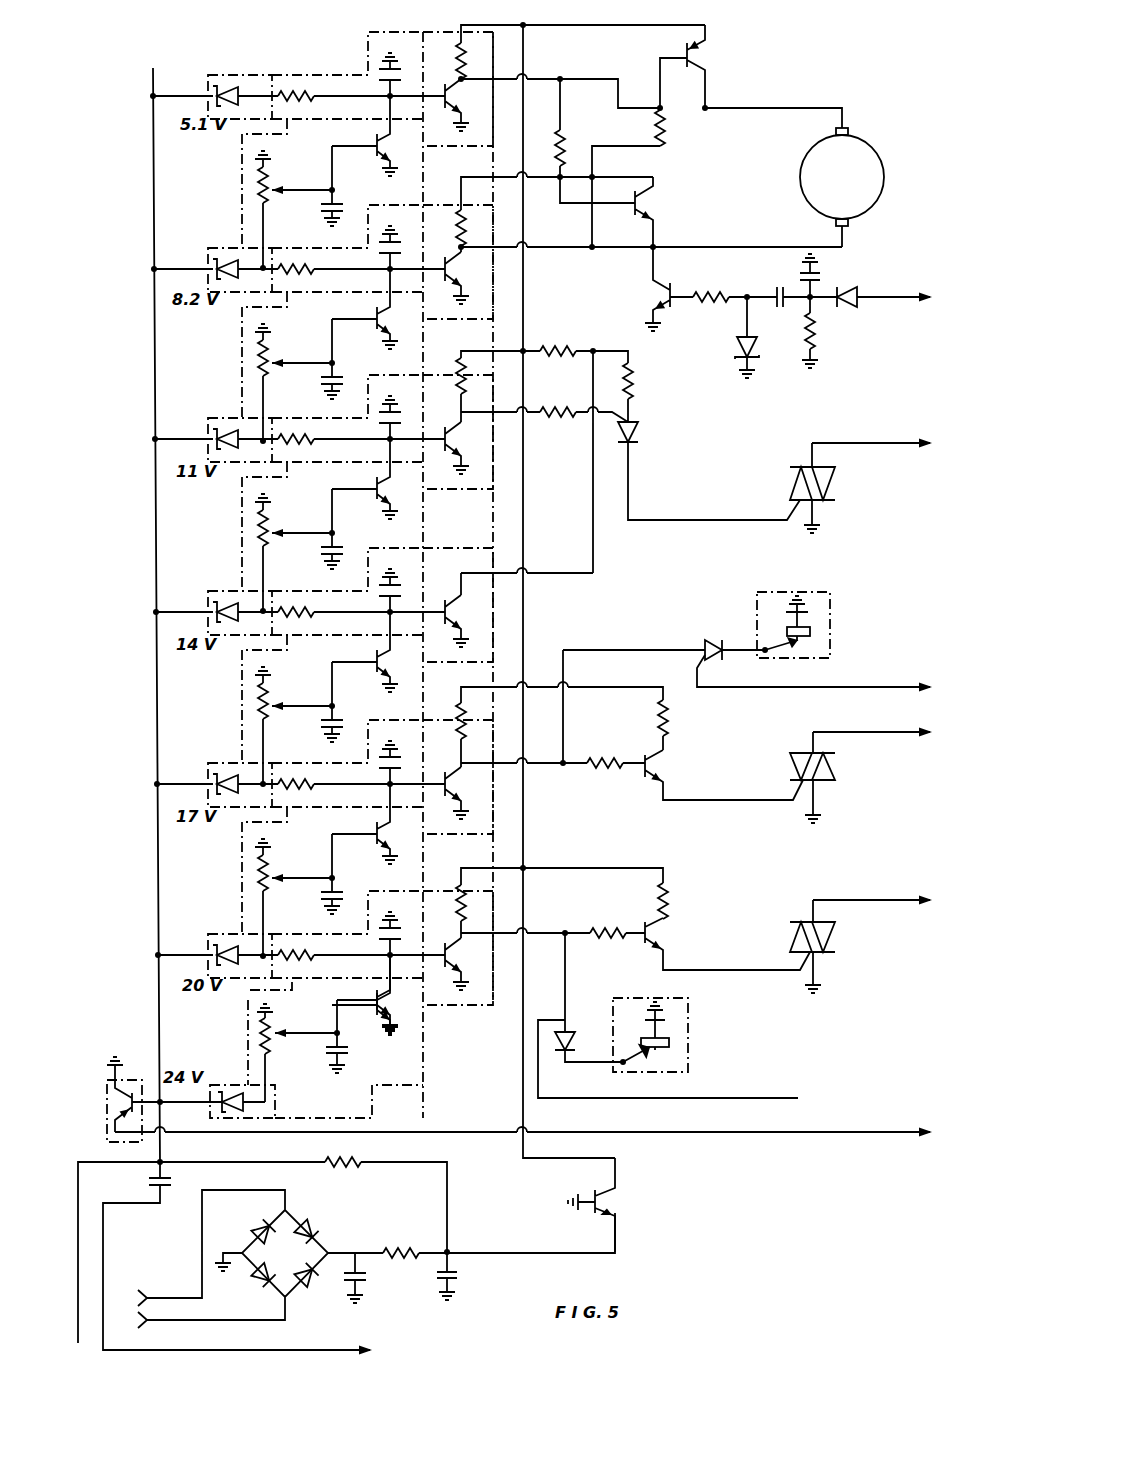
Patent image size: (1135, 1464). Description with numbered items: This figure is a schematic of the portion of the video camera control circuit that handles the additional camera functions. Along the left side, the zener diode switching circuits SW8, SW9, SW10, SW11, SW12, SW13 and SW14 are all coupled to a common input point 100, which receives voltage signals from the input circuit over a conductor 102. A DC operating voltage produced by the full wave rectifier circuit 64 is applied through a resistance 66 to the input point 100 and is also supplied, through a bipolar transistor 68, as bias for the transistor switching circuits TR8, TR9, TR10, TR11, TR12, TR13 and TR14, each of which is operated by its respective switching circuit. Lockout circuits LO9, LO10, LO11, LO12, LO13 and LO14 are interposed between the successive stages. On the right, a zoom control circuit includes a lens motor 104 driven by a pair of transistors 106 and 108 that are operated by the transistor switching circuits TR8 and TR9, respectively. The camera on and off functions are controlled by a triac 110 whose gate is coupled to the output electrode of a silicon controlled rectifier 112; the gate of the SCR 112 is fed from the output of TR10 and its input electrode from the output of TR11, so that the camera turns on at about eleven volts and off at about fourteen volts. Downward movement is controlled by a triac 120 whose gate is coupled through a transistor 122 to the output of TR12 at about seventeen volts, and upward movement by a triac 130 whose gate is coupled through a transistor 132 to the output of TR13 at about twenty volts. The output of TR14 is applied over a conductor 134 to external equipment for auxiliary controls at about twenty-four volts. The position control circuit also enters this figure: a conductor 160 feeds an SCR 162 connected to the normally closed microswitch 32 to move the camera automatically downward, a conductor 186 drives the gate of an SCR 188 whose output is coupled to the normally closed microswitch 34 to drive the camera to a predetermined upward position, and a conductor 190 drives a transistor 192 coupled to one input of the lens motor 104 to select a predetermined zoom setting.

The position sensing switch 32 is at (773, 592).
The position sensing switch 34 is at (690, 1050).
The full wave rectifier circuit 64 is at (312, 1209).
The resistance 66 is at (360, 1163).
The bipolar transistor 68 is at (611, 1206).
The common input point 100 is at (163, 1160).
The conductor 102 is at (100, 1160).
The lens motor 104 is at (867, 211).
The transistor 106 is at (655, 205).
The transistor 108 is at (703, 58).
The triac 110 is at (837, 481).
The silicon controlled rectifier 112 is at (632, 428).
The triac 120 is at (837, 770).
The transistor 122 is at (662, 771).
The triac 130 is at (837, 937).
The transistor 132 is at (660, 930).
The conductor 134 is at (758, 1133).
The conductor 160 is at (793, 688).
The SCR 162 is at (704, 648).
The conductor 186 is at (772, 1098).
The SCR 188 is at (580, 1043).
The conductor 190 is at (870, 292).
The transistor 192 is at (663, 303).
The switching circuit SW8 is at (262, 78).
The switching circuit SW9 is at (262, 251).
The switching circuit SW10 is at (262, 421).
The switching circuit SW11 is at (262, 594).
The switching circuit SW12 is at (262, 766).
The switching circuit SW13 is at (262, 937).
The switching circuit SW14 is at (213, 1082).
The transistor switching circuit TR8 is at (496, 89).
The transistor switching circuit TR9 is at (496, 262).
The transistor switching circuit TR10 is at (501, 432).
The transistor switching circuit TR11 is at (501, 596).
The transistor switching circuit TR12 is at (503, 777).
The transistor switching circuit TR13 is at (503, 946).
The transistor switching circuit TR14 is at (106, 1102).
The lockout circuit LO9 is at (261, 195).
The lockout circuit LO10 is at (261, 368).
The lockout circuit LO11 is at (261, 538).
The lockout circuit LO12 is at (261, 711).
The lockout circuit LO13 is at (261, 883).
The lockout circuit LO14 is at (248, 1025).